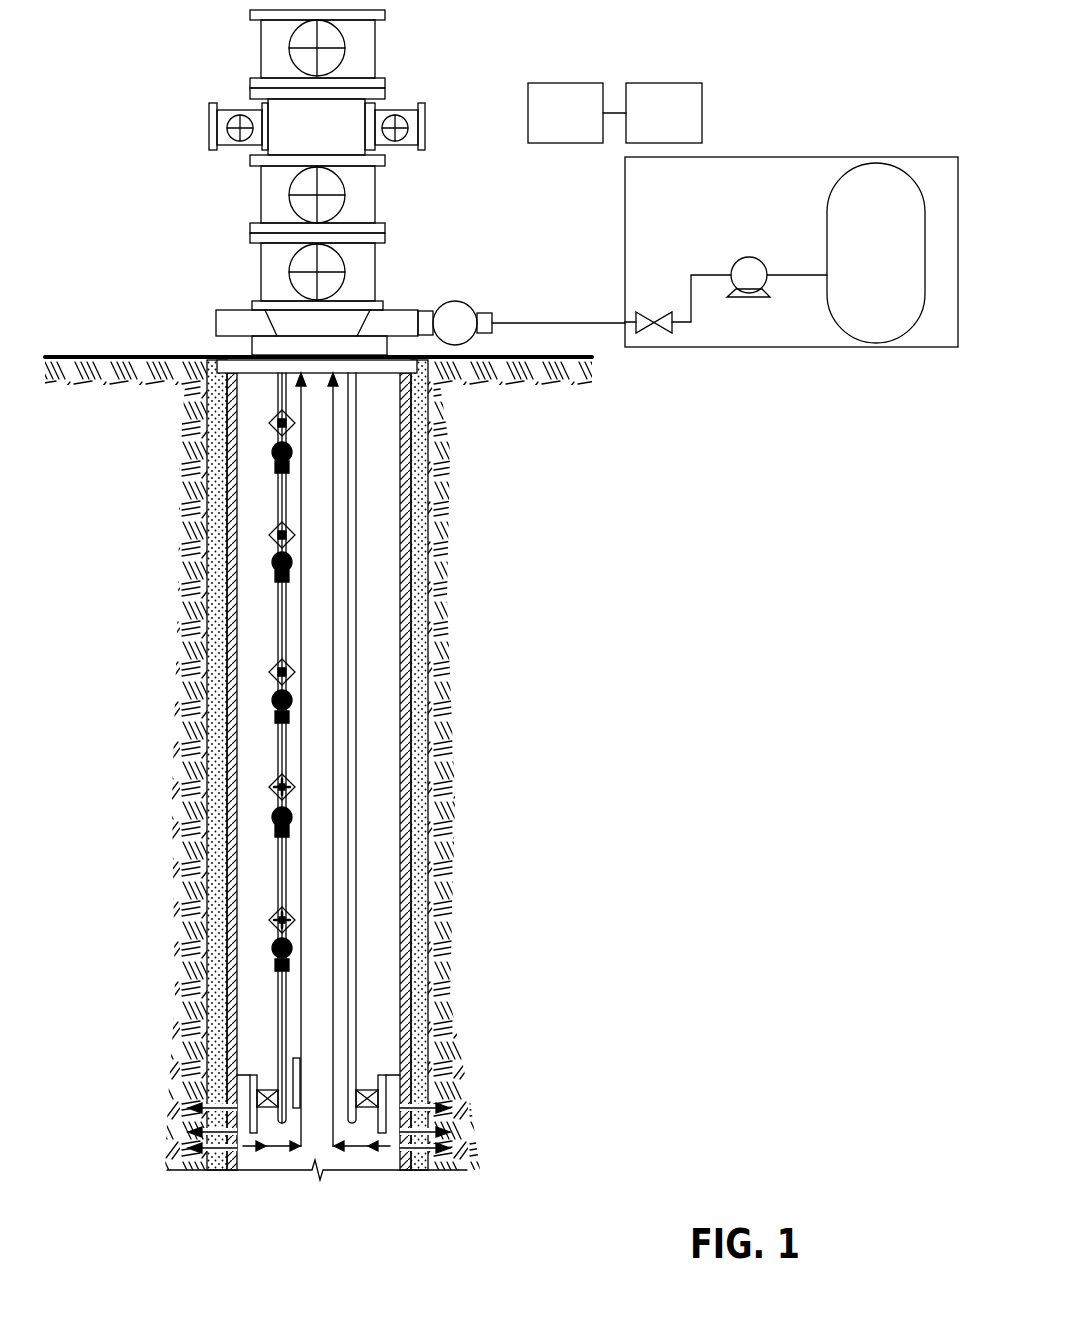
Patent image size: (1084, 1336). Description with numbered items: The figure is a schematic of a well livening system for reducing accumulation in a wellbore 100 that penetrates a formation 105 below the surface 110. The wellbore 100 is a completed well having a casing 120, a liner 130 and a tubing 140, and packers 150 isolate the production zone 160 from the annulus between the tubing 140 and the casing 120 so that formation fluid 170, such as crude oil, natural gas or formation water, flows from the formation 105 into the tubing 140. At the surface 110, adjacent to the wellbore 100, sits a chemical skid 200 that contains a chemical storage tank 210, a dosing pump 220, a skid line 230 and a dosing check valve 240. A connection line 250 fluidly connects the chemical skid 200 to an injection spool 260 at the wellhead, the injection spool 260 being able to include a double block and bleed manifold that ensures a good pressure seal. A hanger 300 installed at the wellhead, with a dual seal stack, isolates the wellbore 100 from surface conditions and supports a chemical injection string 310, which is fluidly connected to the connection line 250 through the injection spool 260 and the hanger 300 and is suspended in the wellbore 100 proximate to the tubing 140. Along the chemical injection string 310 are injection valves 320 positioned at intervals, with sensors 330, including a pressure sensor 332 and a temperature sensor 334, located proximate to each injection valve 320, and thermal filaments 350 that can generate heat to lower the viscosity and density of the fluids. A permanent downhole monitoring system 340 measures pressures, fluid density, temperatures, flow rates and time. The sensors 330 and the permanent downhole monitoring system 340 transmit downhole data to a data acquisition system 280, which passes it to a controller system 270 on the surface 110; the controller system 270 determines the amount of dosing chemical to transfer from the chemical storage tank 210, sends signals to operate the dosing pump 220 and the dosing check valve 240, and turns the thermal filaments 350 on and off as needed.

The wellbore 100 is at (207, 777).
The formation 105 is at (662, 680).
The surface 110 is at (135, 355).
The casing 120 is at (405, 950).
The liner 130 is at (393, 1087).
The tubing 140 is at (357, 893).
The packers 150 is at (242, 1098).
The production zone 160 is at (507, 1135).
The formation fluid 170 is at (280, 612).
The chemical skid 200 is at (818, 157).
The chemical storage tank 210 is at (851, 264).
The dosing pump 220 is at (748, 257).
The skid line 230 is at (693, 310).
The dosing check valve 240 is at (651, 333).
The connection line 250 is at (581, 322).
The injection spool 260 is at (455, 300).
The controller system 270 is at (690, 128).
The data acquisition system 280 is at (591, 128).
The hanger 300 is at (262, 322).
The chemical injection string 310 is at (278, 497).
The injection valves 320 is at (290, 467).
The sensors 330 is at (293, 698).
The pressure sensor 332 is at (276, 698).
The temperature sensor 334 is at (293, 817).
The permanent downhole monitoring system 340 is at (293, 1070).
The thermal filaments 350 is at (295, 786).